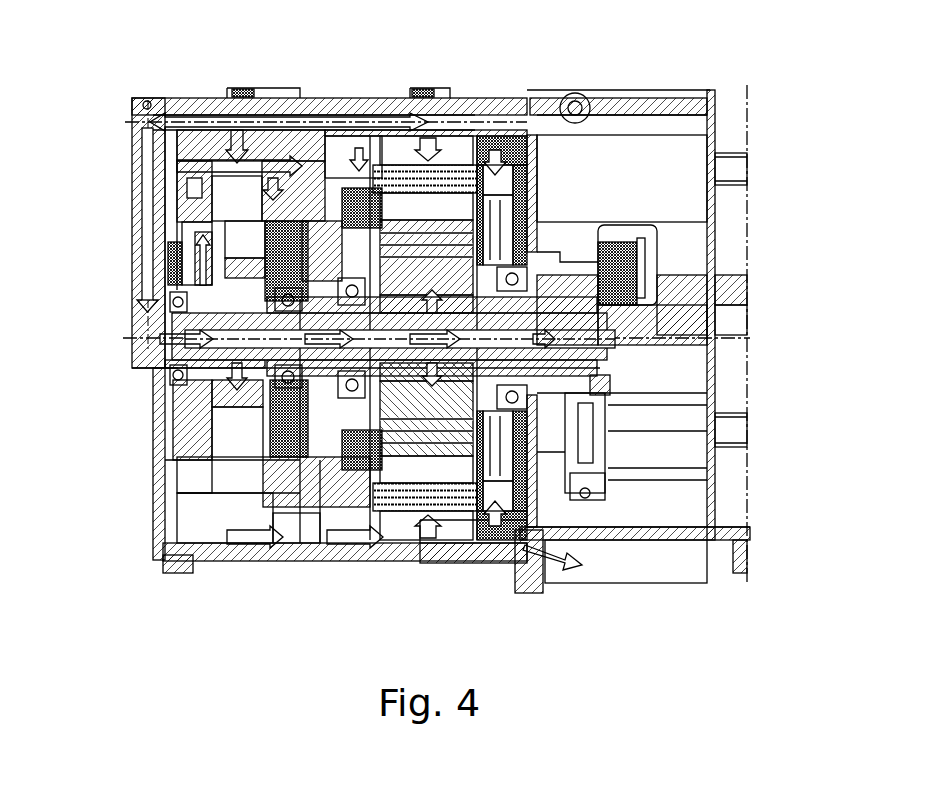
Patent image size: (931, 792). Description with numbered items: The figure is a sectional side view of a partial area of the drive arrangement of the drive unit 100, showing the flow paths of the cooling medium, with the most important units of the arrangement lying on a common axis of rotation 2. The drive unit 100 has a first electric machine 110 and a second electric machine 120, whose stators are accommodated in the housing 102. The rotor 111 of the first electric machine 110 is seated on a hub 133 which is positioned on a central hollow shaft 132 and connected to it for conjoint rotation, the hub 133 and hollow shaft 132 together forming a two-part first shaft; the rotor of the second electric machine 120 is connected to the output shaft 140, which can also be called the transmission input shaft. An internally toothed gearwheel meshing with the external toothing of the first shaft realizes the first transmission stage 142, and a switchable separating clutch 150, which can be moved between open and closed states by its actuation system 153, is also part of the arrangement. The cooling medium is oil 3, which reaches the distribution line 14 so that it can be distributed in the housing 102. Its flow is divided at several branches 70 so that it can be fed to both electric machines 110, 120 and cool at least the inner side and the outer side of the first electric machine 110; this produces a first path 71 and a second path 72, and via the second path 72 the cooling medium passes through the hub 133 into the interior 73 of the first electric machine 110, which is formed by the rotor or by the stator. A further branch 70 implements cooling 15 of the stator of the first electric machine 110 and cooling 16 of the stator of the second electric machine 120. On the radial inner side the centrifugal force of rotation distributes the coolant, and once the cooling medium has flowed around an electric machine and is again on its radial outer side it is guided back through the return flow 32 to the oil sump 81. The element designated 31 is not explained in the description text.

The common axis of rotation 2 is at (615, 340).
The oil 3 is at (335, 560).
The distribution line 14 is at (303, 143).
The cooling 15 is at (235, 150).
The cooling 16 is at (430, 130).
The cover 31 is at (147, 187).
The return flow 32 is at (447, 560).
The branches 70 is at (185, 145).
The first path 71 is at (183, 133).
The second path 72 is at (180, 307).
The interior 73 is at (187, 357).
The oil sump 81 is at (637, 563).
The drive unit 100 is at (232, 607).
The housing 102 is at (325, 100).
The first electric machine 110 is at (236, 185).
The rotor 111 is at (177, 277).
The second electric machine 120 is at (412, 245).
The hollow shaft 132 is at (657, 317).
The hub 133 is at (170, 320).
The output shaft 140 is at (550, 292).
The first transmission stage 142 is at (637, 302).
The separating clutch 150 is at (173, 247).
The actuation system 153 is at (335, 195).